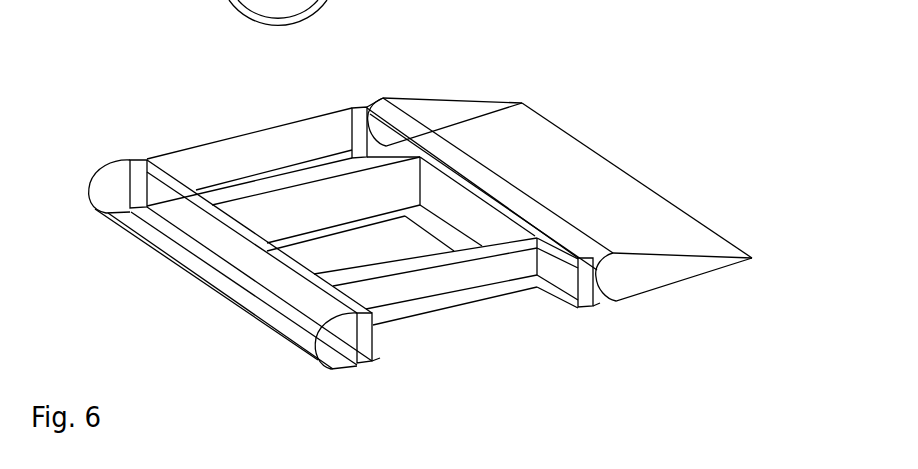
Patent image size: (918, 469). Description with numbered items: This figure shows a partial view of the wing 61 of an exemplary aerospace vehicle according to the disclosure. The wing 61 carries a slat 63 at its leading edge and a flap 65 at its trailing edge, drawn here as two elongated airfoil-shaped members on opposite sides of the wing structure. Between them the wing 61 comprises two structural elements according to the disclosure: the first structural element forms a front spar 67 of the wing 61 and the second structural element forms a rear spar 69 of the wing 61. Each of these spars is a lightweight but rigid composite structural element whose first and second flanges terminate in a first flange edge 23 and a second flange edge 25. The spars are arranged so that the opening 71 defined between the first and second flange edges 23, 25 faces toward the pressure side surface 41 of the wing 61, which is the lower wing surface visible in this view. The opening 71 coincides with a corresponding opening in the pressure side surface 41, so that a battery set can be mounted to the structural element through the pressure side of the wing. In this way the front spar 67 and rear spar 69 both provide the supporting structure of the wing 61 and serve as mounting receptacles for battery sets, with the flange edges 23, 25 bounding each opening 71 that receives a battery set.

The wing 61 is at (514, 74).
The slat 63 is at (187, 250).
The flap 65 is at (610, 187).
The front spar 67 is at (155, 157).
The rear spar 69 is at (343, 127).
The pressure side surface 41 is at (465, 344).
The first flange edge 23 is at (357, 363).
The opening 71 is at (372, 362).
The second flange edge 25 is at (380, 360).